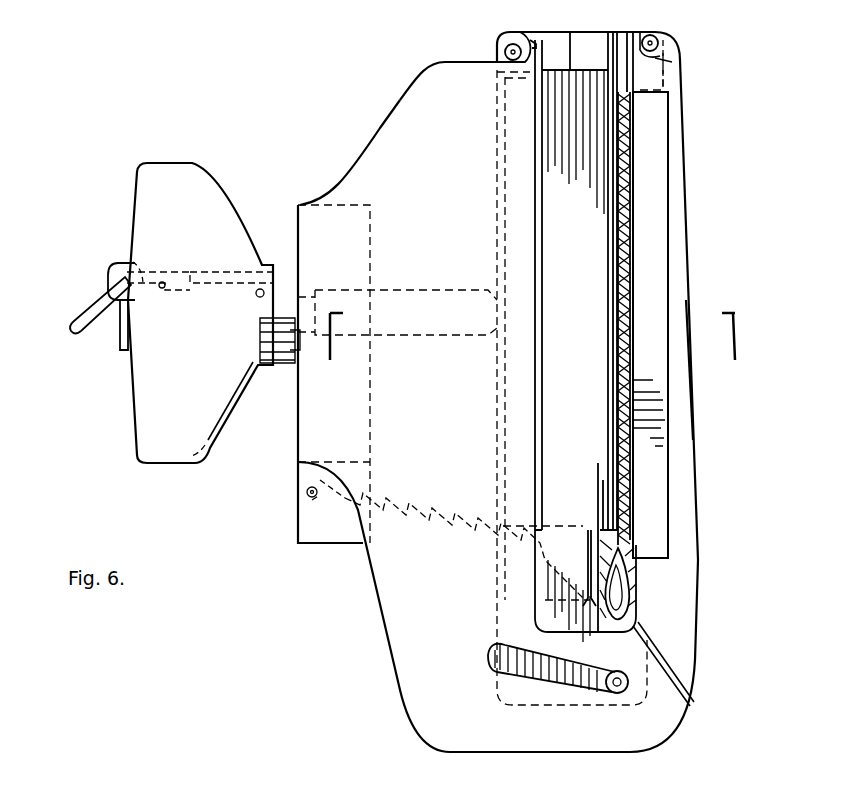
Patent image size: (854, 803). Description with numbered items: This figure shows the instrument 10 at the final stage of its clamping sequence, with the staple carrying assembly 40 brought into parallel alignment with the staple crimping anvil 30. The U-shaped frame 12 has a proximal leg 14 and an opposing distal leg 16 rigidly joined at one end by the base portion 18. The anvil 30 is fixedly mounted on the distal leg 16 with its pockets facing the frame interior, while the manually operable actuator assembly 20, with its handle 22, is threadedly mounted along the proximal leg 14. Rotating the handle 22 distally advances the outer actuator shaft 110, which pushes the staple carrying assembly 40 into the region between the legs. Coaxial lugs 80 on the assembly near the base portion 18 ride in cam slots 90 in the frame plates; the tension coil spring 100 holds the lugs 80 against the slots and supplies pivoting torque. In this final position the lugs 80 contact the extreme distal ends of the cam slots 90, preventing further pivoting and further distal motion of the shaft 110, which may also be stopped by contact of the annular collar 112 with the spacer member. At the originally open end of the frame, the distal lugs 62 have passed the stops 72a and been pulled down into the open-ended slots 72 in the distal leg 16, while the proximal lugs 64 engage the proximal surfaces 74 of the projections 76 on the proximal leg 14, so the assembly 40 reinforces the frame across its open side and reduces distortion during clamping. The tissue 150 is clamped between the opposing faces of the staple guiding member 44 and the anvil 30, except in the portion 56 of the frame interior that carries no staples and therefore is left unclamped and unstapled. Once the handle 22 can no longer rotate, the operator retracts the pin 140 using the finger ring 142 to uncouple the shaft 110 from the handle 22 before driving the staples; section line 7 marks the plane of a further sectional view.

The instrument 10 is at (310, 92).
The U-shaped frame 12 is at (712, 713).
The proximal leg 14 is at (396, 122).
The distal leg 16 is at (685, 446).
The base portion 18 is at (568, 746).
The actuator assembly 20 is at (200, 293).
The handle 22 is at (190, 168).
The staple crimping anvil 30 is at (655, 143).
The staple carrying assembly 40 is at (582, 42).
The staple guiding member 44 is at (612, 331).
The portion of the interior of the U-shaped frame 56 is at (582, 580).
The distal lugs 62 is at (649, 34).
The proximal lugs 64 is at (500, 54).
The open-ended slots 72 is at (663, 58).
The stops 72a is at (670, 32).
The proximal surfaces 74 is at (502, 40).
The projections 76 is at (532, 38).
The lugs 80 is at (617, 672).
The cam slots 90 is at (566, 672).
The tension coil spring 100 is at (438, 560).
The outer actuator shaft 110 is at (431, 294).
The annular collar 112 is at (278, 364).
The pin 140 is at (133, 262).
The finger ring 142 is at (85, 310).
The tissue 150 is at (632, 598).
The section line 7- 7 is at (531, 352).